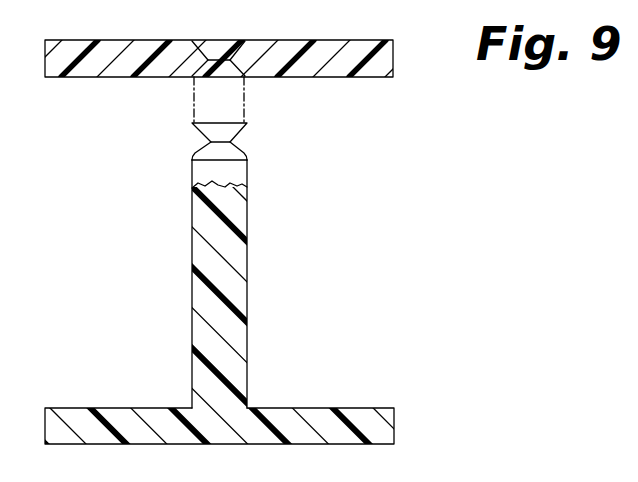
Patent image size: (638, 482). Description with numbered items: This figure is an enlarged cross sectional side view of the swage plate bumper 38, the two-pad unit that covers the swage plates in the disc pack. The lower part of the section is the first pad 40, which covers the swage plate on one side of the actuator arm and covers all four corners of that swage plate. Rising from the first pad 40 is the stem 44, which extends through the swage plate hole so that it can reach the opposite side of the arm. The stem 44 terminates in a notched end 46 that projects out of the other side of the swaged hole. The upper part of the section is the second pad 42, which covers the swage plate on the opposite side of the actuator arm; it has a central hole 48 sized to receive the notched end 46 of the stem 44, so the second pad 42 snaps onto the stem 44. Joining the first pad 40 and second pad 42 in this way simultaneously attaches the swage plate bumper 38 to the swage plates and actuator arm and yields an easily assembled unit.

The swage plate bumper 38 is at (415, 70).
The first pad 40 is at (315, 417).
The second pad 42 is at (332, 70).
The stem 44 is at (239, 261).
The notched end 46 is at (226, 133).
The central hole 48 is at (207, 46).